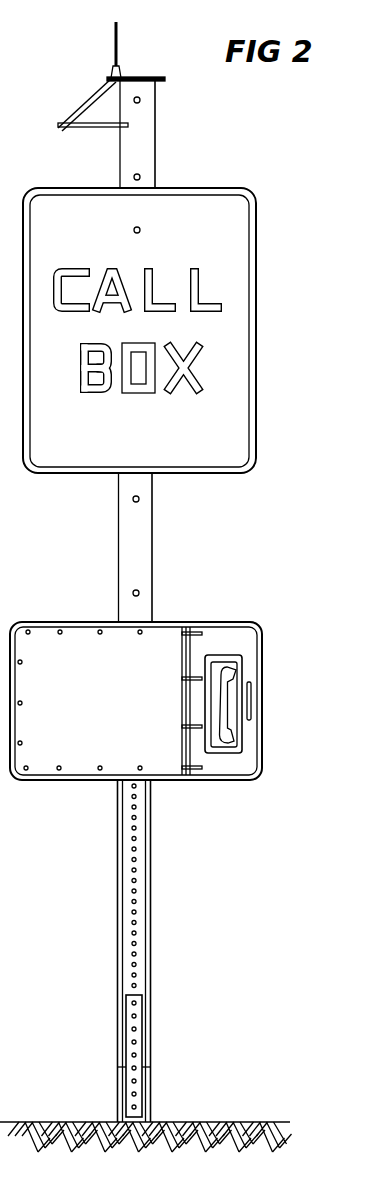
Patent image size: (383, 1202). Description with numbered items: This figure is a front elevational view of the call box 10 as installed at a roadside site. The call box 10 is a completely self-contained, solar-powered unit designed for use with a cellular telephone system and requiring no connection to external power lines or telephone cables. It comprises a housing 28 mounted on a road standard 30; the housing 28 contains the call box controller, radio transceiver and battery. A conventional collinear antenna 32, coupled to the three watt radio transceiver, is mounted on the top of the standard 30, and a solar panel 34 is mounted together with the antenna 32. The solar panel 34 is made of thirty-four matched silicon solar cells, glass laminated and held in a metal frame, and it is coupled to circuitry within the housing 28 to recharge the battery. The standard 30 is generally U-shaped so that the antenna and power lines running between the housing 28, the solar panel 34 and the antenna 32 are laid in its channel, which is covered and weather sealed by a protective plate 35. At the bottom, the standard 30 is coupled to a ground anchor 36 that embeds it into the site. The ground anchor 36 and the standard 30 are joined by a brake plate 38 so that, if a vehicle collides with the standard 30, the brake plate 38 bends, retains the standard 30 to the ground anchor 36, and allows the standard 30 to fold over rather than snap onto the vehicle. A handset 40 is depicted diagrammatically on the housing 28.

The call box 10 is at (278, 347).
The housing 28 is at (160, 636).
The road standard 30 is at (150, 842).
The collinear antenna 32 is at (119, 37).
The solar panel 34 is at (83, 100).
The protective plate 35 is at (147, 533).
The ground anchor 36 is at (148, 1098).
The brake plate 38 is at (135, 1003).
The handset 40 is at (230, 676).